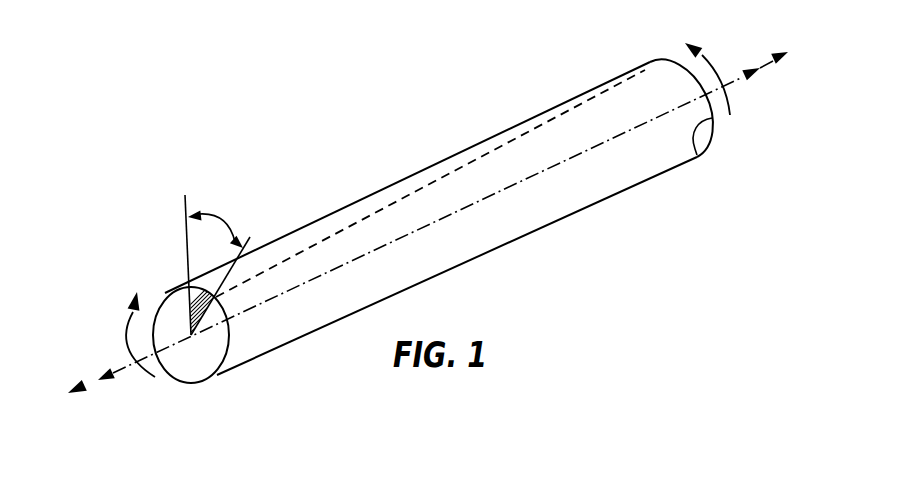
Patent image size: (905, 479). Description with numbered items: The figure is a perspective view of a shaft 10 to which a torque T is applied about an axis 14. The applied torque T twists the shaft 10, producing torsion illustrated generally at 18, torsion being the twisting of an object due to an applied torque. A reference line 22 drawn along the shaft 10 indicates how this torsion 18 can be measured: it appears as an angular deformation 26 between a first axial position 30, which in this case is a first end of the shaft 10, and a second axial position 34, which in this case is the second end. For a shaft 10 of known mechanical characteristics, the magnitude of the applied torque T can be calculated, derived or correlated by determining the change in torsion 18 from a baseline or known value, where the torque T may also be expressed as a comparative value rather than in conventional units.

The shaft 10 is at (572, 185).
The axis 14 is at (90, 380).
The torsion 18 is at (185, 310).
The reference line 22 is at (362, 218).
The angular deformation 26 is at (218, 229).
The first axial position 30 is at (228, 345).
The second axial position 34 is at (697, 155).
The torque T is at (707, 72).